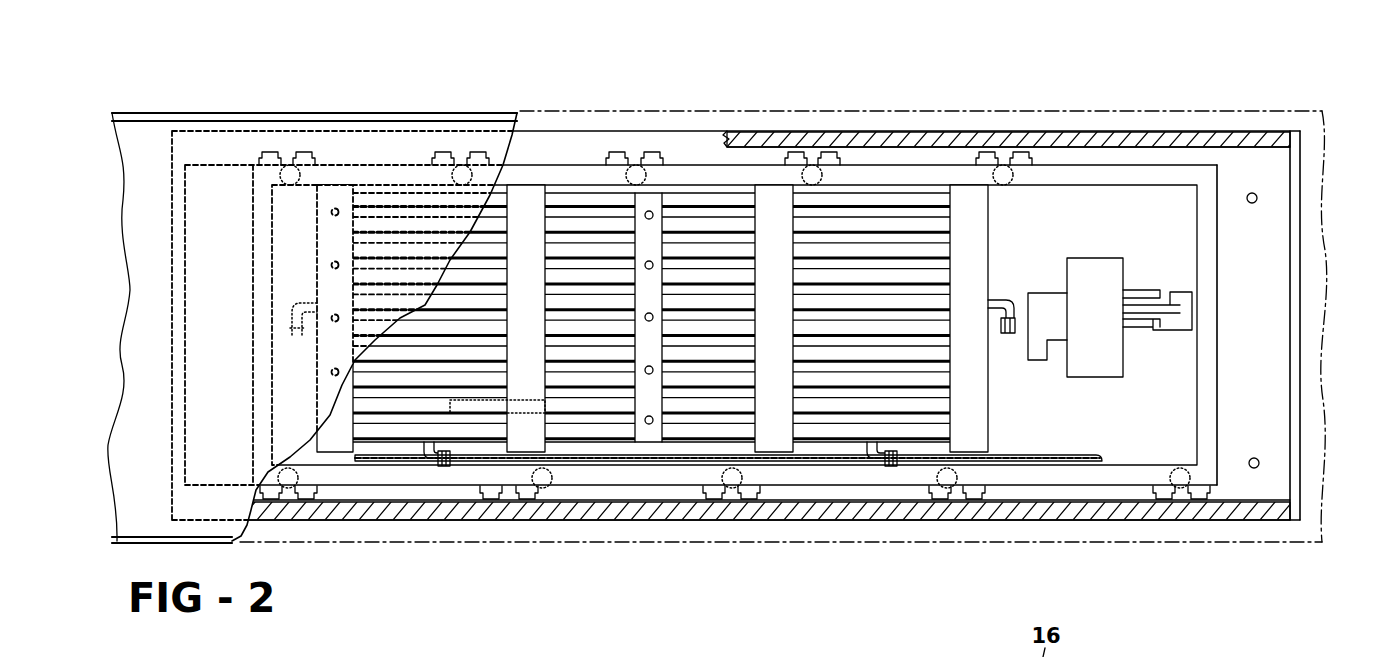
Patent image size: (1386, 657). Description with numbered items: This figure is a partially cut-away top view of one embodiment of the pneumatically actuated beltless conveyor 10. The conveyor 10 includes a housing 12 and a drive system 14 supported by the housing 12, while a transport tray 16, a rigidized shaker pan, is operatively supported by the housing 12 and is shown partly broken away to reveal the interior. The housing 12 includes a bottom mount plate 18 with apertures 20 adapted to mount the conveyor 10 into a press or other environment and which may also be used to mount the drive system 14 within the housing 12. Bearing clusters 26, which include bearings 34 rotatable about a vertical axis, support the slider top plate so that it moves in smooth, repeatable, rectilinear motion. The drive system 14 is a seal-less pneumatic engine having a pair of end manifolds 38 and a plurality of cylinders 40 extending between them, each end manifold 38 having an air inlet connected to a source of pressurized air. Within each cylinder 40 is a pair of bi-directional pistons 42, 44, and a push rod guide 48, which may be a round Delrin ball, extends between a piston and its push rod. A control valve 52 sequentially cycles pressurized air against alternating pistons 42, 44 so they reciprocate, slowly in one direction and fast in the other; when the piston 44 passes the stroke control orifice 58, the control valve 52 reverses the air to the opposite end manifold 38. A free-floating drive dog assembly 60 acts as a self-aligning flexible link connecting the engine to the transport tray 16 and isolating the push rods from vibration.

The conveyor 10 is at (1240, 95).
The housing 12 is at (959, 130).
The drive system 14 is at (702, 331).
The transport tray 16 is at (152, 343).
The bottom mount plate 18 is at (1247, 240).
The apertures 20 is at (1257, 198).
The bearing clusters 26 is at (745, 490).
The bearings 34 is at (523, 470).
The end manifolds 38 is at (977, 220).
The cylinders 40 is at (388, 438).
The piston 42 is at (435, 407).
The piston 44 is at (883, 205).
The push rod guide 48 is at (576, 200).
The control valve 52 is at (1100, 362).
The stroke control orifice 58 is at (866, 452).
The drive dog assembly 60 is at (672, 214).